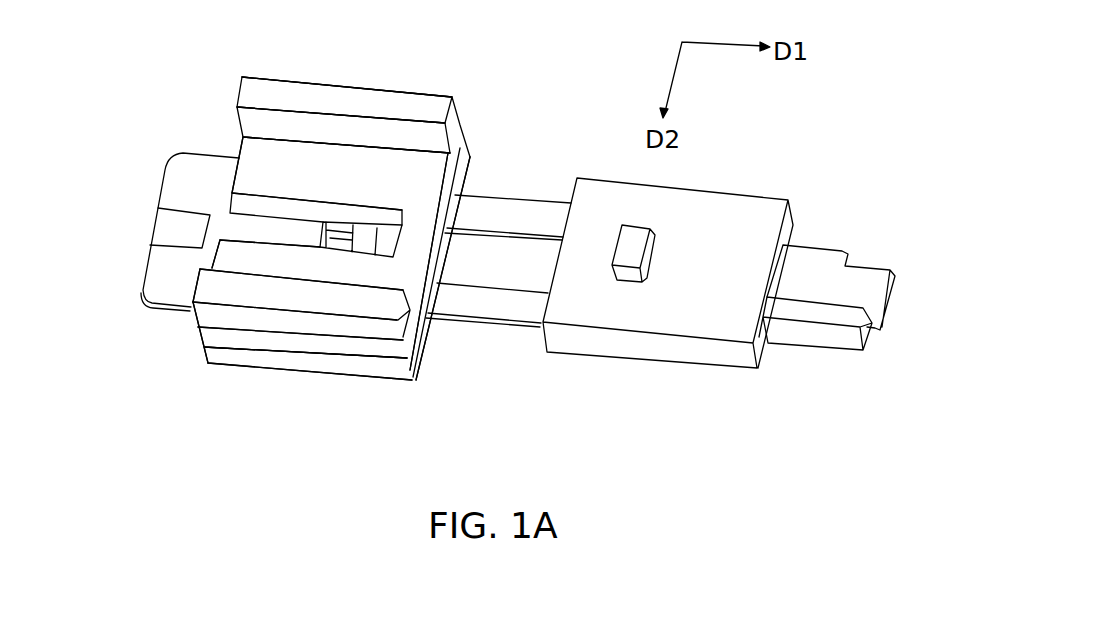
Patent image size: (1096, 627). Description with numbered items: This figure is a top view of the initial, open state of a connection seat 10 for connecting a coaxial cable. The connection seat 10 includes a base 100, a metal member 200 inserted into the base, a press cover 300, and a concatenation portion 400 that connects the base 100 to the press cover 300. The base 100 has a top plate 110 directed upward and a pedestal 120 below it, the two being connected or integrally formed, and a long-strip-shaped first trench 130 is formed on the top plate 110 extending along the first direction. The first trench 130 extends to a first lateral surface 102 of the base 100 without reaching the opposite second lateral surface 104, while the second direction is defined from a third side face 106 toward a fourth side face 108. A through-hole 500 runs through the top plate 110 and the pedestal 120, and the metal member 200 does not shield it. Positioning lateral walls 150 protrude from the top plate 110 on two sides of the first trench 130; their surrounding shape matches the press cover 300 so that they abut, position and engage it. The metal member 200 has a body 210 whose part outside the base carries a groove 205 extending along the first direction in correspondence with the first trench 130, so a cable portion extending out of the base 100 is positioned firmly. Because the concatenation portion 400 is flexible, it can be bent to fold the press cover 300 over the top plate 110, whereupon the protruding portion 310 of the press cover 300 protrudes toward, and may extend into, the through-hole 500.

The connection seat 10 is at (216, 30).
The base 100 is at (307, 235).
The first lateral surface 102 is at (190, 330).
The second lateral surface 104 is at (417, 340).
The third side face 106 is at (357, 88).
The fourth side face 108 is at (220, 353).
The top plate 110 is at (300, 157).
The pedestal 120 is at (378, 368).
The first trench 130 is at (266, 233).
The positioning lateral walls 150 is at (271, 92).
The metal member 200 is at (147, 272).
The groove 205 is at (170, 231).
The body 210 is at (157, 275).
The press cover 300 is at (719, 289).
The protruding portion 310 is at (633, 242).
The concatenation portion 400 is at (497, 198).
The through-hole 500 is at (341, 240).